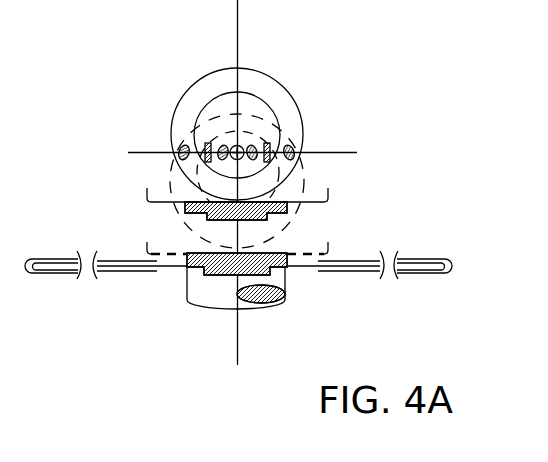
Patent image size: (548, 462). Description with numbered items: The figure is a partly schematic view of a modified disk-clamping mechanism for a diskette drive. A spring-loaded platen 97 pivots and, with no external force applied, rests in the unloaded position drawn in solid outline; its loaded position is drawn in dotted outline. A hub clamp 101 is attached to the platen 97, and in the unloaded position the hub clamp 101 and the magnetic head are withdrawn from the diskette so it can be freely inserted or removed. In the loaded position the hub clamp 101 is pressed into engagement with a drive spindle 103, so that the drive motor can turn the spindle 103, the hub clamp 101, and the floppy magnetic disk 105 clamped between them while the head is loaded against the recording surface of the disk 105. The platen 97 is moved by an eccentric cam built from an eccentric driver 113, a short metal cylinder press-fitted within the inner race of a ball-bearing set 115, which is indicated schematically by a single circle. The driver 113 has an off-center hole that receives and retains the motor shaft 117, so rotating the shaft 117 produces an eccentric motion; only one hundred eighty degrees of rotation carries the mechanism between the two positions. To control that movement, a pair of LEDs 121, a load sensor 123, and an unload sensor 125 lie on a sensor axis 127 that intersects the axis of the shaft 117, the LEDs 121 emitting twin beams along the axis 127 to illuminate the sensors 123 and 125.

The spring-loaded platen 97 is at (146, 195).
The hub clamp 101 is at (274, 215).
The drive spindle 103 is at (285, 286).
The floppy magnetic disk 105 is at (127, 272).
The eccentric driver 113 is at (212, 98).
The ball-bearing set 115 is at (220, 68).
The motor shaft 117 is at (230, 142).
The pair of LEDs 121 is at (256, 160).
The load sensor 123 is at (184, 147).
The unload sensor 125 is at (296, 133).
The sensor axis 127 is at (338, 152).